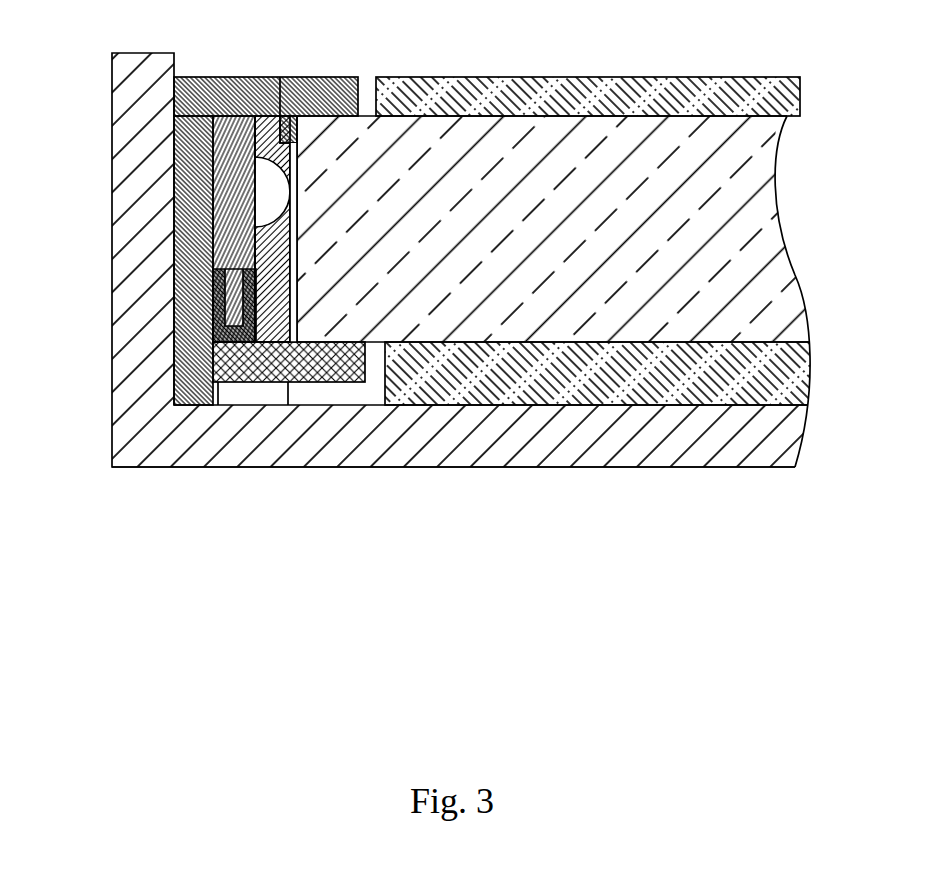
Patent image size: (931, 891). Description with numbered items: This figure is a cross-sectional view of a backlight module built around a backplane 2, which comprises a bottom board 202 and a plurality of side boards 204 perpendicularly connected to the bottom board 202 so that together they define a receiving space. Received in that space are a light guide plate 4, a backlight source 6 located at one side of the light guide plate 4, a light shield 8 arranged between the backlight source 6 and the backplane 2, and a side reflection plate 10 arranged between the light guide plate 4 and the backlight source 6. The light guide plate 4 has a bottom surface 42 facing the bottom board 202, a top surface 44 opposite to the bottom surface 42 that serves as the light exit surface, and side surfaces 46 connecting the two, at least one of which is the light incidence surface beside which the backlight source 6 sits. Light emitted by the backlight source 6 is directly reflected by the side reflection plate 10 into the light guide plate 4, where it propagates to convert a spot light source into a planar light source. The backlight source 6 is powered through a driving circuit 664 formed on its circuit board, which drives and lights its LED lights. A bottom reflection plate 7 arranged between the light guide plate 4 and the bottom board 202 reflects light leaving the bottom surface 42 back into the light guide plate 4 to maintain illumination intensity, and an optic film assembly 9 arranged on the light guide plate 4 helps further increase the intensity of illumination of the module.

The backplane 2 is at (812, 445).
The bottom board 202 is at (612, 435).
The side board 204 is at (127, 274).
The light guide plate 4 is at (738, 238).
The bottom surface 42 is at (460, 342).
The top surface 44 is at (482, 117).
The side surface 46 is at (293, 177).
The backlight source 6 is at (240, 258).
The driving circuit 664 is at (257, 395).
The bottom reflection plate 7 is at (793, 377).
The light shield 8 is at (187, 143).
The optic film assembly 9 is at (712, 85).
The side reflection plate 10 is at (280, 108).